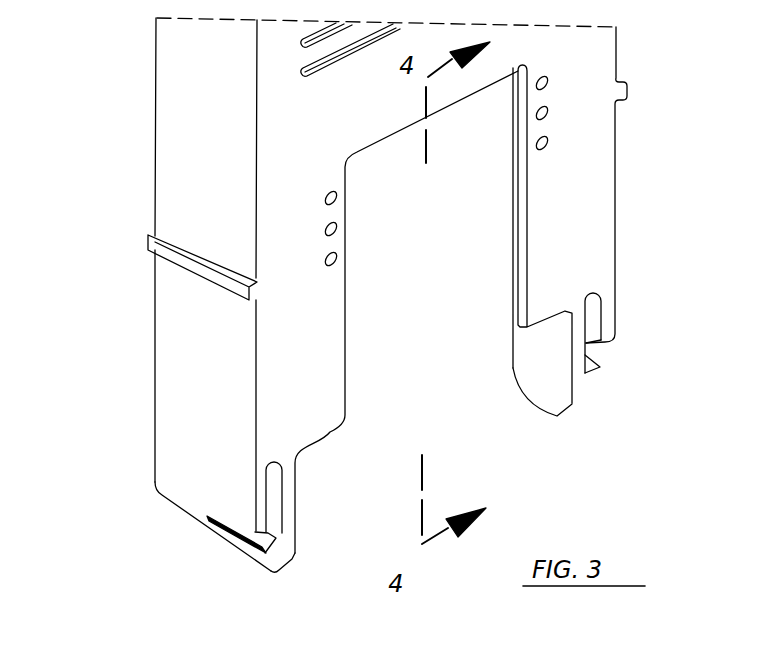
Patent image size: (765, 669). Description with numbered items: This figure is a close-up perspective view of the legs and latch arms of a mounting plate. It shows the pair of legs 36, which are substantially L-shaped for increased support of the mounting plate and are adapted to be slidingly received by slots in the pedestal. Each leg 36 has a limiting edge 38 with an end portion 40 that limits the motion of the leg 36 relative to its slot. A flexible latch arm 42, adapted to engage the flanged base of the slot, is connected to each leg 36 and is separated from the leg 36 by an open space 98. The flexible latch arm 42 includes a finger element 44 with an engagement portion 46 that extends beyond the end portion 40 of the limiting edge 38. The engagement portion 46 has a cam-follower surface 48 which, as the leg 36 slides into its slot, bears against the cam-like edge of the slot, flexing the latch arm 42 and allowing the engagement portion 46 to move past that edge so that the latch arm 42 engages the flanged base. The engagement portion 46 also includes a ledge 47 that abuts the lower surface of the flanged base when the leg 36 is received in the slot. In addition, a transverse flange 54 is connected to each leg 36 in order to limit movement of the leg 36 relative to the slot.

The leg 36 is at (150, 467).
The limiting edge 38 is at (188, 510).
The end portion 40 is at (603, 344).
The flexible latch arm 42 is at (312, 494).
The finger element 44 is at (580, 393).
The engagement portion 46 is at (597, 382).
The ledge 47 is at (300, 533).
The cam-follower surface 48 is at (243, 548).
The transverse flange 54 is at (173, 258).
The open space 98 is at (592, 325).